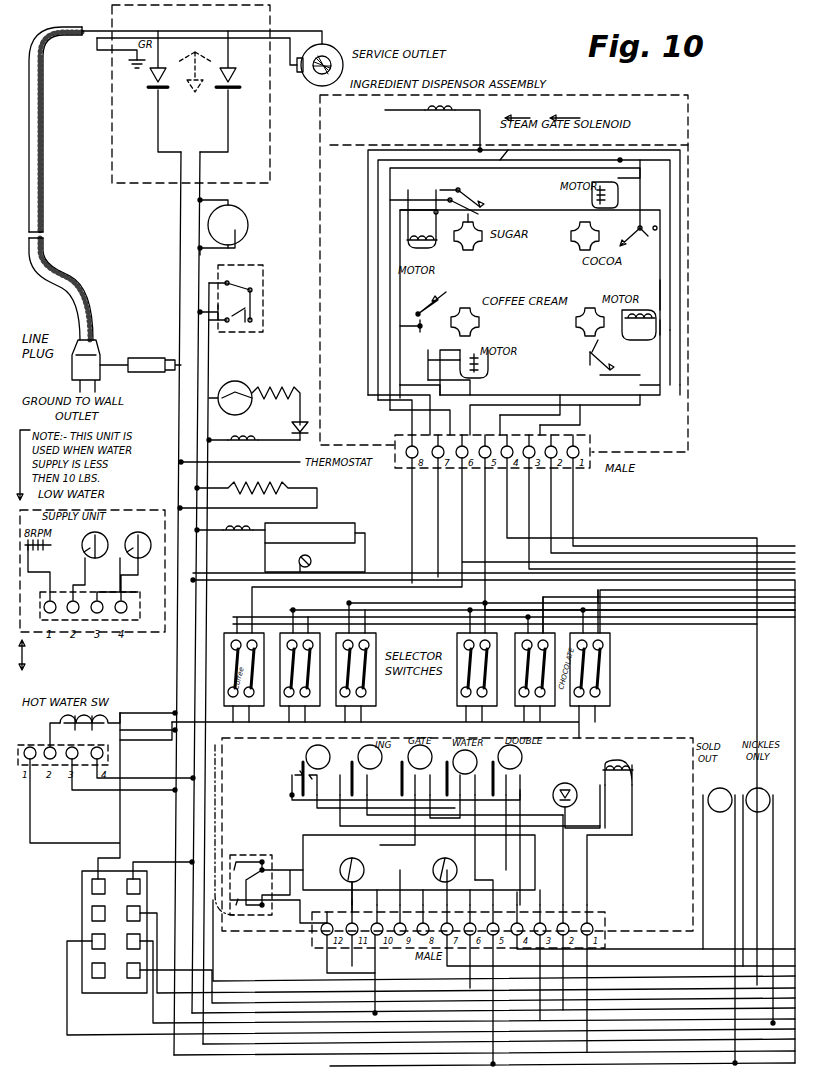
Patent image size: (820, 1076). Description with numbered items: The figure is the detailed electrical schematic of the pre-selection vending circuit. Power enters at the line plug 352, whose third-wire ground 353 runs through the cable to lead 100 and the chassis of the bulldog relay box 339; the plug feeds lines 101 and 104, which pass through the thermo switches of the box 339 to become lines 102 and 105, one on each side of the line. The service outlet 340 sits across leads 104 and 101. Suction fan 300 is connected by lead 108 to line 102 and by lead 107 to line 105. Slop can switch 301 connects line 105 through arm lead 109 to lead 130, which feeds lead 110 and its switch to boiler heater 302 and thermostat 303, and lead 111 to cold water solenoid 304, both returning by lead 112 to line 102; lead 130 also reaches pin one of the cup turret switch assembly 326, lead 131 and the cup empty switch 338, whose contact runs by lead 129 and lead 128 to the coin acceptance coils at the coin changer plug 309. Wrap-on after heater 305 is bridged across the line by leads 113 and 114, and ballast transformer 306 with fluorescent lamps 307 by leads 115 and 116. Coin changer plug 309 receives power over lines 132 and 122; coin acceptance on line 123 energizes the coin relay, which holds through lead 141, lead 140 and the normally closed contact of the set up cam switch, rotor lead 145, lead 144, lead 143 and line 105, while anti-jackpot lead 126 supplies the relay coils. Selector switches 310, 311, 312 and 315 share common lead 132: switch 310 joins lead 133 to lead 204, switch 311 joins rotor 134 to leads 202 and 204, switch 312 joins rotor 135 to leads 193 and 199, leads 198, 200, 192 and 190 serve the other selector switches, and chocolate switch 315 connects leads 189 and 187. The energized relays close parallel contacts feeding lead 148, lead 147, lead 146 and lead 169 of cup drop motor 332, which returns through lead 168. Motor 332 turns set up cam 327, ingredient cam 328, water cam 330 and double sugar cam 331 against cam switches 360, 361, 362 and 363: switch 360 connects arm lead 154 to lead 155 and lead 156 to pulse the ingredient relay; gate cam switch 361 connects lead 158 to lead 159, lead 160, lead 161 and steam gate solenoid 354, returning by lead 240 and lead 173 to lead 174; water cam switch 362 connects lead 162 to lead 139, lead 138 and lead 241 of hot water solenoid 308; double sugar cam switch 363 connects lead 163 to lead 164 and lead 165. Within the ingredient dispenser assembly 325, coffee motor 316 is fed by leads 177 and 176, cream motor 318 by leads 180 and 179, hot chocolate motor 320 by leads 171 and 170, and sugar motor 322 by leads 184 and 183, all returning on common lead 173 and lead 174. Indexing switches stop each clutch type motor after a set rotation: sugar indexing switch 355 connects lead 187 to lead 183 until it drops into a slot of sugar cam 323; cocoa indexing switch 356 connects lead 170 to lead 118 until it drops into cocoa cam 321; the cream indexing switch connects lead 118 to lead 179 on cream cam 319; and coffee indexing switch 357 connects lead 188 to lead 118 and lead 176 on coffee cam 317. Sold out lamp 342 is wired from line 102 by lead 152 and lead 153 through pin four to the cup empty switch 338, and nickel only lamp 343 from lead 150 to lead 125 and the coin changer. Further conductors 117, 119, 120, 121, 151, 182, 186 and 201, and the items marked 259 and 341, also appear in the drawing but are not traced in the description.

The ground lead 100 is at (108, 50).
The line lead 101 is at (84, 44).
The power line 102 is at (158, 128).
The line lead 104 is at (90, 29).
The power line 105 is at (230, 128).
The fan motor lead 107 is at (205, 202).
The fan motor lead 108 is at (251, 247).
The slop can switch arm lead 109 is at (195, 305).
The boiler heater switch lead 110 is at (210, 398).
The cold water solenoid lead 111 is at (235, 452).
The return lead 112 is at (178, 474).
The wrap-on heater lead 113 is at (225, 498).
The wrap-on heater lead 114 is at (318, 500).
The ballast lead 115 is at (200, 522).
The lamp return lead 116 is at (240, 582).
The wire 117 is at (462, 490).
The indexing switch common lead 118 is at (672, 345).
The wire 119 is at (136, 782).
The wire 120 is at (156, 796).
The wire 121 is at (149, 723).
The coin changer power lead 122 is at (164, 861).
The coin switch lead 123 is at (476, 170).
The nickel only lamp lead 125 is at (240, 1054).
The anti-jackpot lead 126 is at (308, 989).
The coin acceptance lead 128 is at (122, 1031).
The cup empty switch lead 129 is at (300, 836).
The slop can switch lead 130 is at (195, 284).
The cup empty switch rotor lead 131 is at (575, 906).
The selector switch common lead 132 is at (122, 764).
The selector switch lead 133 is at (185, 708).
The selector switch rotor lead 134 is at (262, 734).
The selector switch rotor lead 135 is at (320, 734).
The hot water solenoid lead 138 is at (84, 842).
The water cam switch contact lead 139 is at (352, 858).
The set up cam switch contact lead 140 is at (292, 804).
The holding circuit lead 141 is at (745, 1052).
The power lead 143 is at (370, 964).
The cam switch common lead 144 is at (372, 872).
The set up cam switch rotor lead 145 is at (386, 806).
The set up cam switch contact lead 146 is at (320, 822).
The cup drop motor lead 147 is at (470, 870).
The relay box lead 148 is at (755, 1020).
The nickel only lamp lead 150 is at (773, 920).
The wire 151 is at (732, 904).
The sold out lamp lead 152 is at (302, 848).
The sold out lamp lead 153 is at (698, 890).
The ingredient cam switch arm lead 154 is at (352, 796).
The ingredient cam switch contact lead 155 is at (445, 906).
The pulse relay lead 156 is at (760, 972).
The gate cam switch lead 158 is at (405, 794).
The gate cam switch lead 159 is at (420, 798).
The steam gate lead 160 is at (721, 544).
The steam gate solenoid lead 161 is at (378, 418).
The water cam switch arm lead 162 is at (440, 806).
The double sugar cam switch arm lead 163 is at (500, 804).
The double sugar cam switch contact lead 164 is at (504, 868).
The double sugar lead 165 is at (362, 972).
The cup drop motor lead 168 is at (625, 840).
The cup drop motor lead 169 is at (585, 810).
The hot chocolate motor lead 170 is at (656, 276).
The relay box lead 171 is at (480, 510).
The dispenser common lead 173 is at (672, 298).
The dispenser return lead 174 is at (433, 495).
The coffee motor lead 176 is at (583, 424).
The relay box lead 177 is at (566, 510).
The cream motor lead 179 is at (660, 399).
The relay box lead 180 is at (522, 492).
The wire 182 is at (421, 216).
The sugar motor lead 183 is at (583, 404).
The relay box lead 184 is at (556, 494).
The wire 186 is at (600, 174).
The indexing switch contact lead 187 is at (625, 644).
The coffee indexing switch contact lead 188 is at (422, 336).
The chocolate switch lead 189 is at (600, 628).
The double sugar switch lead 190 is at (550, 600).
The selector switch lead 192 is at (528, 622).
The sugar switch lead 193 is at (672, 615).
The selector switch lead 198 is at (468, 622).
The selector switch lead 199 is at (366, 622).
The selector switch lead 200 is at (480, 622).
The wire 201 is at (304, 622).
The cream relay lead 202 is at (290, 612).
The coffee relay lead 204 is at (230, 622).
The steam gate solenoid lead 240 is at (480, 132).
The hot water solenoid lead 241 is at (39, 732).
The cam 259 is at (306, 755).
The suction fan 300 is at (235, 221).
The slop can switch 301 is at (258, 297).
The boiler heater 302 is at (262, 395).
The thermostat 303 is at (308, 438).
The cold water solenoid 304 is at (253, 434).
The wrap-on after heater 305 is at (278, 492).
The ballast transformer 306 is at (230, 543).
The fluorescent lamps and starter assembly 307 is at (340, 525).
The hot water solenoid 308 is at (90, 729).
The coin changer plug 309 is at (401, 953).
The selector switch 310 is at (216, 713).
The coffee cream selector switch 311 is at (274, 713).
The coffee sugar selector switch 312 is at (332, 713).
The hot chocolate selector switch 315 is at (570, 726).
The coffee motor 316 is at (488, 362).
The coffee cam 317 is at (480, 326).
The cream motor 318 is at (639, 333).
The cream cam 319 is at (582, 326).
The hot chocolate motor 320 is at (592, 200).
The cocoa cam 321 is at (584, 244).
The sugar motor 322 is at (421, 227).
The sugar cam 323 is at (474, 248).
The ingredient dispenser assembly 325 is at (698, 119).
The cup turret switch assembly 326 is at (592, 748).
The set up cam 327 is at (457, 834).
The ingredient cam 328 is at (412, 768).
The water cam 330 is at (462, 772).
The double sugar cam 331 is at (507, 770).
The cup drop motor 332 is at (624, 762).
The cup empty switch 338 is at (278, 888).
The bulldog relay box 339 is at (112, 128).
The service outlet 340 is at (336, 50).
The rinse 341 is at (539, 766).
The sold out lamp 342 is at (719, 925).
The nickel only lamp 343 is at (759, 906).
The line plug 352 is at (78, 392).
The ground lead 353 is at (172, 360).
The steam gate solenoid 354 is at (408, 108).
The sugar indexing switch 355 is at (480, 214).
The cocoa indexing switch 356 is at (640, 222).
The coffee indexing switch 357 is at (452, 304).
The ingredient cam switch 360 is at (362, 750).
The gate cam switch 361 is at (402, 756).
The water cam switch 362 is at (448, 760).
The double sugar cam switch 363 is at (495, 762).